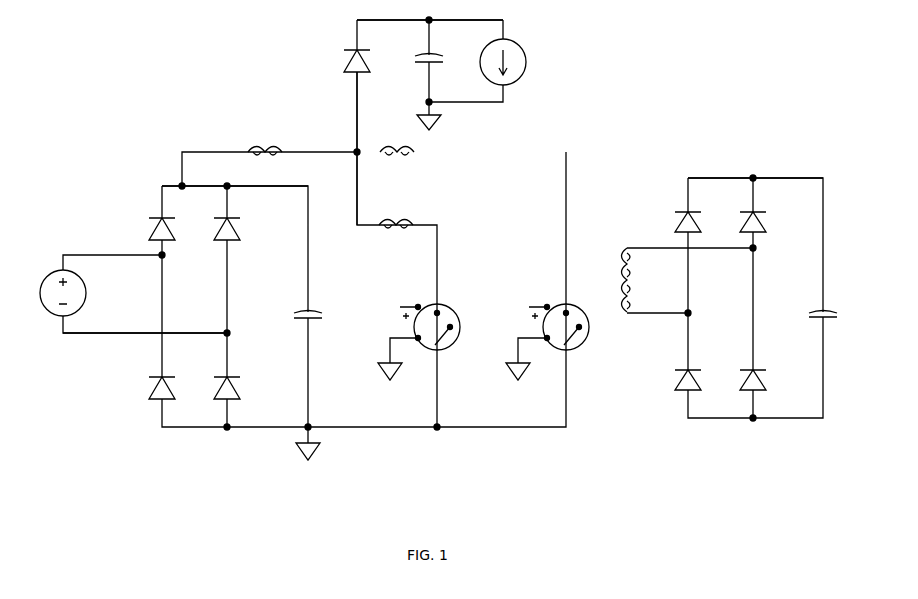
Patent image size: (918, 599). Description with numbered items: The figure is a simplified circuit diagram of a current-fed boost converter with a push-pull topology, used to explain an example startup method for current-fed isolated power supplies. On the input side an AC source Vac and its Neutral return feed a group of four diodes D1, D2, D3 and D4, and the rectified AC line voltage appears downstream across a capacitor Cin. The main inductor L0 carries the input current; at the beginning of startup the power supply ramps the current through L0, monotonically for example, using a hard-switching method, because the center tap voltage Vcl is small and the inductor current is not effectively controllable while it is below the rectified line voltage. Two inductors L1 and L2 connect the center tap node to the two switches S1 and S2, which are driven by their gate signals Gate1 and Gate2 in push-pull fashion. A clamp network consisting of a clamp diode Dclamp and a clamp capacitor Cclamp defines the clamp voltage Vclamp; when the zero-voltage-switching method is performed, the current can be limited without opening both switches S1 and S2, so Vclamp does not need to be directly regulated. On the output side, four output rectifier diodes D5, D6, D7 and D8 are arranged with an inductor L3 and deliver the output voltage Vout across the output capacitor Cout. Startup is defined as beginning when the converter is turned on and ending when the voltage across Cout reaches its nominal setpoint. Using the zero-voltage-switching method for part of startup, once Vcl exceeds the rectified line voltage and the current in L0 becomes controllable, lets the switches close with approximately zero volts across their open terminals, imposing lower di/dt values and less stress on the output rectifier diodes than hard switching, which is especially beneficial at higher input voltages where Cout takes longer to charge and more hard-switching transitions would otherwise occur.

The AC input voltage source Vac is at (124, 294).
The neutral terminal Neutral is at (130, 343).
The bridge rectifier diode D1 is at (152, 213).
The bridge rectifier diode D2 is at (152, 375).
The bridge rectifier diode D3 is at (217, 213).
The bridge rectifier diode D4 is at (217, 375).
The main inductor L0 is at (265, 139).
The input capacitor Cin is at (298, 304).
The clamp diode Dclamp is at (330, 46).
The clamp voltage Vclamp is at (430, 10).
The clamp capacitor Cclamp is at (452, 43).
The center tap voltage Vcl is at (340, 148).
The first inductor L1 is at (396, 213).
The second inductor L2 is at (397, 139).
The switch S1 is at (423, 332).
The switch S2 is at (552, 332).
The gate drive of first switch Gate1 is at (384, 309).
The gate drive of second switch Gate2 is at (513, 309).
The output rectifier diode D5 is at (678, 208).
The output rectifier diode D6 is at (678, 366).
The output rectifier diode D7 is at (744, 208).
The output rectifier diode D8 is at (744, 366).
The output inductor L3 is at (639, 280).
The output voltage node Vout is at (755, 169).
The output capacitor Cout is at (834, 302).